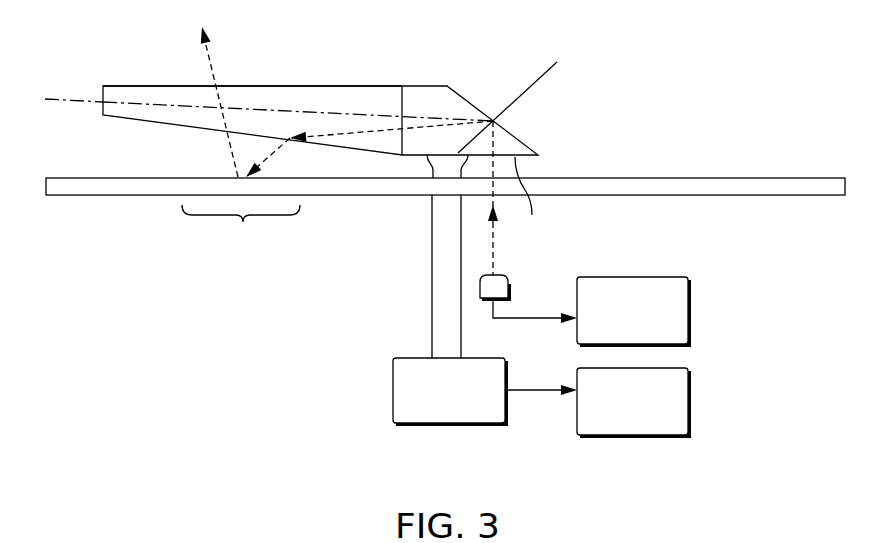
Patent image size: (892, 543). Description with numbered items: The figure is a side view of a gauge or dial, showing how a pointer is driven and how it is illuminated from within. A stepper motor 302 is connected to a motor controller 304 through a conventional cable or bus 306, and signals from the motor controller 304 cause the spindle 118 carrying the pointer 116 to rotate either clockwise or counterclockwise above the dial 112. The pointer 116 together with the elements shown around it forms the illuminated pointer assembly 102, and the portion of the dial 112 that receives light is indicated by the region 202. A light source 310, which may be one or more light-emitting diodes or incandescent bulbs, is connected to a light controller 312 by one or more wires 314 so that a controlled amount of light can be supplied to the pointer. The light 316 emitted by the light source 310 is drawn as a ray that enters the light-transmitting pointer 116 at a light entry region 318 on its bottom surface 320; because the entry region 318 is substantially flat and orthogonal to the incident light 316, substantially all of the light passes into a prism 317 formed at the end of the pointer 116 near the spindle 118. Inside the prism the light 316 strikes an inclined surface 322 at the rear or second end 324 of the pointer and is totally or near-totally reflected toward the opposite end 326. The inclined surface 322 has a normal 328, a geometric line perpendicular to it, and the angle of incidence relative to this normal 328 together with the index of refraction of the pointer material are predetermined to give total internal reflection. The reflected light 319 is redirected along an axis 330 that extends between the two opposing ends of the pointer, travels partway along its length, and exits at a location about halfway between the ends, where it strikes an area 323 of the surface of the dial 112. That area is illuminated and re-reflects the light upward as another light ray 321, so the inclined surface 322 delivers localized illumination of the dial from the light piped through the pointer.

The optical element / prism 102 is at (320, 97).
The dial 112 is at (688, 178).
The pointer 116 is at (325, 85).
The spindle 118 is at (432, 320).
The illuminated region 202 is at (190, 237).
The stepper motor 302 is at (393, 393).
The motor controller 304 is at (690, 403).
The cable or bus 306 is at (535, 393).
The light source 310 is at (510, 290).
The light controller 312 is at (690, 315).
The wires 314 is at (535, 320).
The light 316 is at (496, 258).
The prism 317 is at (425, 93).
The light entry region 318 is at (535, 203).
The reflected light 319 is at (378, 128).
The bottom surface 320 is at (372, 172).
The light ray 321 is at (212, 58).
The inclined surface 322 is at (292, 143).
The area of the dial surface 323 is at (232, 177).
The second end 324 is at (546, 41).
The opposite end 326 is at (86, 73).
The normal 328 is at (536, 81).
The axis 330 is at (62, 101).